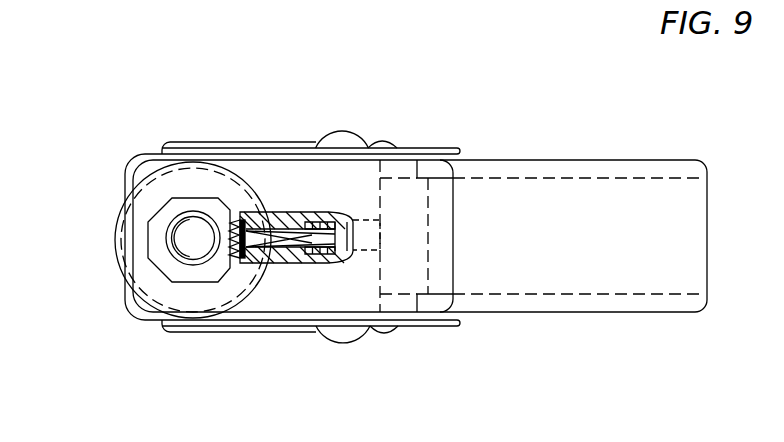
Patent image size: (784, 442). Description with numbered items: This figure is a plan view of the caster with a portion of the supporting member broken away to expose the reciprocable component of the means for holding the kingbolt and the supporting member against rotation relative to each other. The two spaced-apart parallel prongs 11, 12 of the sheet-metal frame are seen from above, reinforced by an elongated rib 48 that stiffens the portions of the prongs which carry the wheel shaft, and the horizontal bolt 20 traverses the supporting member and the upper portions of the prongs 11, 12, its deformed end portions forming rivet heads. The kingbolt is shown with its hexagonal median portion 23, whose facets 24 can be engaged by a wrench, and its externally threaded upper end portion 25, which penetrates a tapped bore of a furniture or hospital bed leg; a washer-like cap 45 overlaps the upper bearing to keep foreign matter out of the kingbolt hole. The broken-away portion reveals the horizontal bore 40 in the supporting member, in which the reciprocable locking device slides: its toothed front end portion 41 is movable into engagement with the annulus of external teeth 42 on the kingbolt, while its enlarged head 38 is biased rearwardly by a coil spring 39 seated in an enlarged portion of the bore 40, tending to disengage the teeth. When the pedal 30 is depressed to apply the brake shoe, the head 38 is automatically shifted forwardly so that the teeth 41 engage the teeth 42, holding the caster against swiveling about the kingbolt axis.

The prong 11 is at (440, 152).
The prong 12 is at (434, 328).
The horizontal bolt 20 is at (357, 136).
The median portion of the kingbolt 23 is at (150, 245).
The facets 24 is at (186, 194).
The externally threaded upper end portion 25 is at (172, 257).
The pedal 30 is at (568, 245).
The enlarged head 38 is at (354, 219).
The coil spring 39 is at (332, 229).
The horizontal hole or bore 40 is at (318, 256).
The toothed front end portion 41 is at (233, 218).
The external teeth 42 is at (232, 212).
The washer-like cap 45 is at (143, 197).
The elongated rib 48 is at (271, 140).